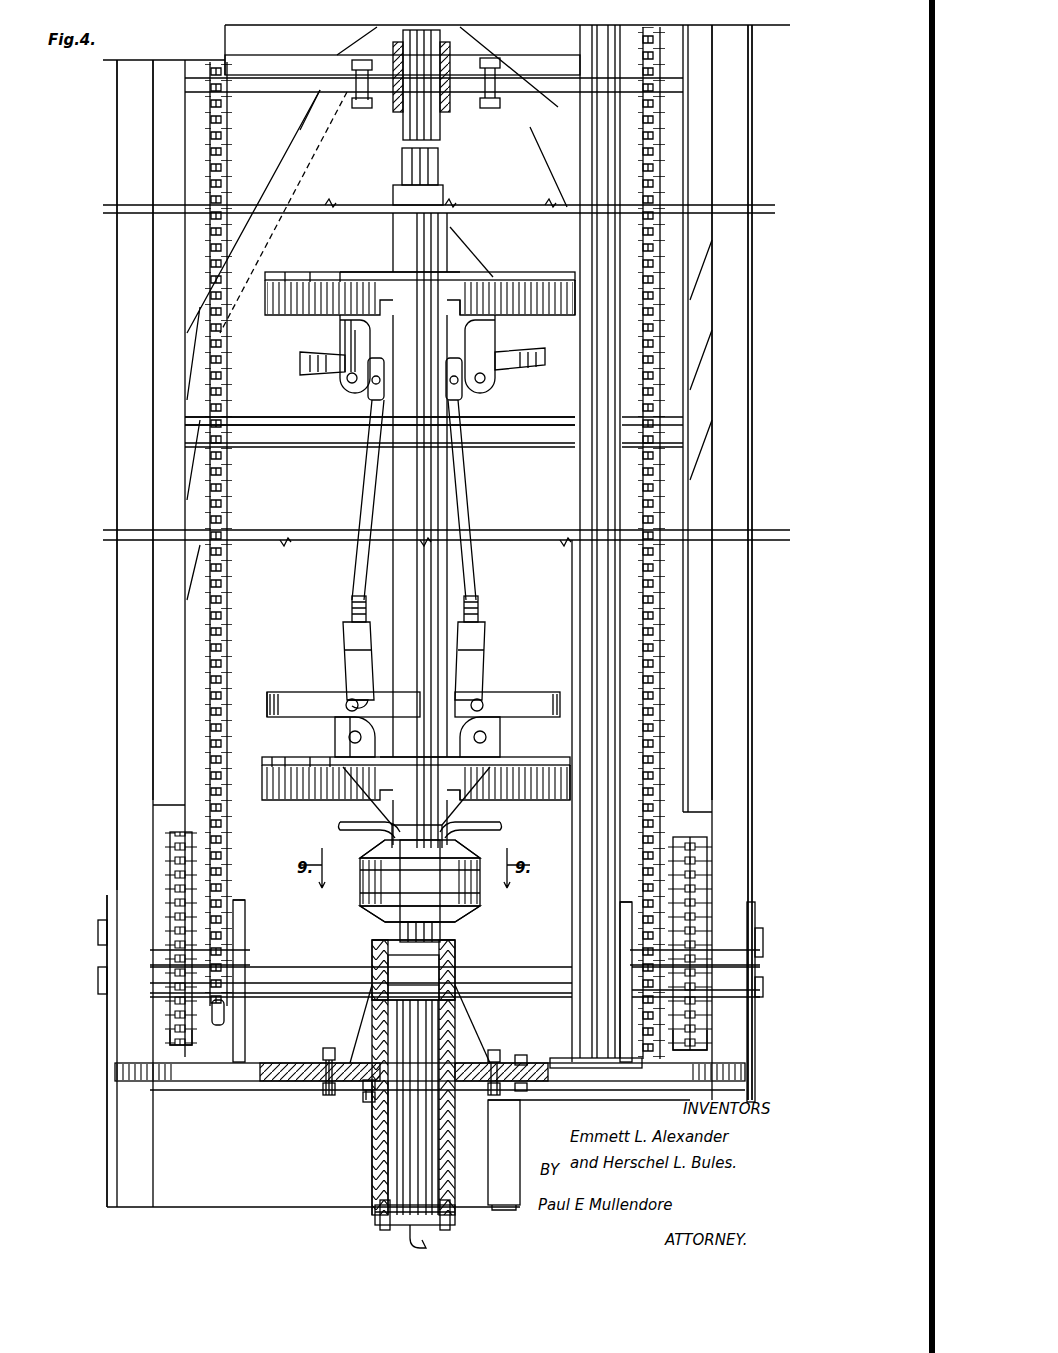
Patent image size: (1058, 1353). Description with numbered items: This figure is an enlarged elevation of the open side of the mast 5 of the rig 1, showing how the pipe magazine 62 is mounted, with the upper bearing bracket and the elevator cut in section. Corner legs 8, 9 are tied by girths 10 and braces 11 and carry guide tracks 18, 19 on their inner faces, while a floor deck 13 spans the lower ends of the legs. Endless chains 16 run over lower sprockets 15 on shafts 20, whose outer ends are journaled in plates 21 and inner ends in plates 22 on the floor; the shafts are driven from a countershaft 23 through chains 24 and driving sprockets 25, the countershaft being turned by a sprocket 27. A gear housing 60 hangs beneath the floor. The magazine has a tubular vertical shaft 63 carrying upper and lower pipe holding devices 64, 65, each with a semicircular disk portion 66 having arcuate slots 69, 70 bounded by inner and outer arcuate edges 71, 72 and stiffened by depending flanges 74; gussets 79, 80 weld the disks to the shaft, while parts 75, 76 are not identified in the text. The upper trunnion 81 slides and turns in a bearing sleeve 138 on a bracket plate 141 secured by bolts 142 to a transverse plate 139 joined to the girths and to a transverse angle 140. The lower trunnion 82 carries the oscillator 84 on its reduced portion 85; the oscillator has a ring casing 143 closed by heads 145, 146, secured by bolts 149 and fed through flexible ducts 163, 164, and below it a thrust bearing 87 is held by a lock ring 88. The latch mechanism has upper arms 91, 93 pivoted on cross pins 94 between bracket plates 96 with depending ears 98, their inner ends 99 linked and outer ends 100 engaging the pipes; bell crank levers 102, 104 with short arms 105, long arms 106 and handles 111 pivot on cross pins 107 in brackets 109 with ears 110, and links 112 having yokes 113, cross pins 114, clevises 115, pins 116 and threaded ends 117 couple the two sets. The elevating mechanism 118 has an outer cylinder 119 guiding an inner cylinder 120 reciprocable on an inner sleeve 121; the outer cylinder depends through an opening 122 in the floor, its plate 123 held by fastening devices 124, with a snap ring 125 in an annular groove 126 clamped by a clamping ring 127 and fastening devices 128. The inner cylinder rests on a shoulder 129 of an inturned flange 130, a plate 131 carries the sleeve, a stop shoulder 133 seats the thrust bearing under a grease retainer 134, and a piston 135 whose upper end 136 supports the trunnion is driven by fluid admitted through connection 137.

The rig 1 is at (103, 889).
The mast 5 is at (750, 128).
The corner leg 8 is at (118, 405).
The corner leg 9 is at (740, 428).
The girths 10 is at (275, 410).
The braces 11 is at (298, 145).
The floor deck 13 is at (208, 1081).
The sprockets 15 is at (240, 900).
The endless chains 16 is at (228, 615).
The guide track 18 is at (165, 305).
The guide track 19 is at (700, 305).
The shafts 20 is at (160, 968).
The plates 21 is at (107, 1015).
The plates 22 is at (243, 1005).
The countershaft 23 is at (550, 975).
The endless chains 24 is at (170, 836).
The driving sprockets 25 is at (182, 1040).
The sprocket 27 is at (226, 1015).
The housing 60 is at (488, 1148).
The magazine 62 is at (461, 224).
The vertical shaft 63 is at (448, 508).
The upper pipe holding device 64 is at (276, 272).
The lower pipe holding device 65 is at (264, 760).
The disk portion 66 is at (480, 272).
The arcuate slot 69 is at (312, 272).
The arcuate slot 70 is at (540, 272).
The inner arcuate edge 71 is at (340, 272).
The outer arcuate edge 72 is at (286, 272).
The depending flanges 74 is at (266, 310).
The bar 75 is at (270, 757).
The pivot arm 76 is at (360, 722).
The triangular shaped gussets 79 is at (382, 250).
The gussets 80 is at (366, 795).
The trunnion 81 is at (440, 160).
The trunnion 82 is at (450, 815).
The oscillator 84 is at (362, 900).
The reduced portion 85 is at (442, 936).
The thrust bearing 87 is at (395, 975).
The lock ring 88 is at (385, 990).
The pivoted arm 91 is at (300, 363).
The pivoted arm 93 is at (527, 352).
The cross pin 94 is at (348, 384).
The bracket plates 96 is at (342, 330).
The depending ears 98 is at (348, 352).
The inner ends 99 is at (378, 358).
The outer ends 100 is at (300, 373).
The bell crank lever 102 is at (325, 683).
The bell crank lever 104 is at (532, 688).
The short arms 105 is at (360, 717).
The longer outwardly directed arms 106 is at (296, 692).
The cross pins 107 is at (362, 733).
The brackets 109 is at (392, 762).
The upwardly directed ears 110 is at (362, 738).
The handles 111 is at (267, 705).
The links 112 is at (364, 495).
The yokes 113 is at (464, 392).
The cross pins 114 is at (476, 360).
The clevises 115 is at (345, 655).
The pins 116 is at (362, 690).
The threaded lower ends 117 is at (352, 612).
The elevating mechanism 118 is at (370, 945).
The outer cylinder 119 is at (372, 1012).
The inner cylinder 120 is at (380, 1030).
The inner sleeve 121 is at (456, 1010).
The opening 122 is at (470, 1055).
The plate 123 is at (300, 1066).
The fastening devices 124 is at (323, 1050).
The snap ring 125 is at (372, 1100).
The annular groove 126 is at (465, 1095).
The clamping ring 127 is at (520, 1092).
The fastening devices 128 is at (363, 1100).
The shoulder 129 is at (380, 1212).
The inturned flange 130 is at (375, 1215).
The plate 131 is at (378, 1222).
The stop shoulder 133 is at (458, 975).
The grease retainer 134 is at (458, 945).
The elongated piston 135 is at (410, 1140).
The upper end 136 is at (460, 996).
The connection 137 is at (408, 1242).
The bearing sleeve 138 is at (450, 110).
The transverse plate 139 is at (270, 92).
The transverse angle 140 is at (275, 58).
The bracket plate 141 is at (352, 68).
The bolts 142 is at (360, 108).
The outer ring shaped casing part 143 is at (478, 887).
The head 145 is at (460, 850).
The head 146 is at (470, 908).
The bolts 149 is at (385, 915).
The flexible duct 163 is at (362, 826).
The flexible duct 164 is at (502, 822).